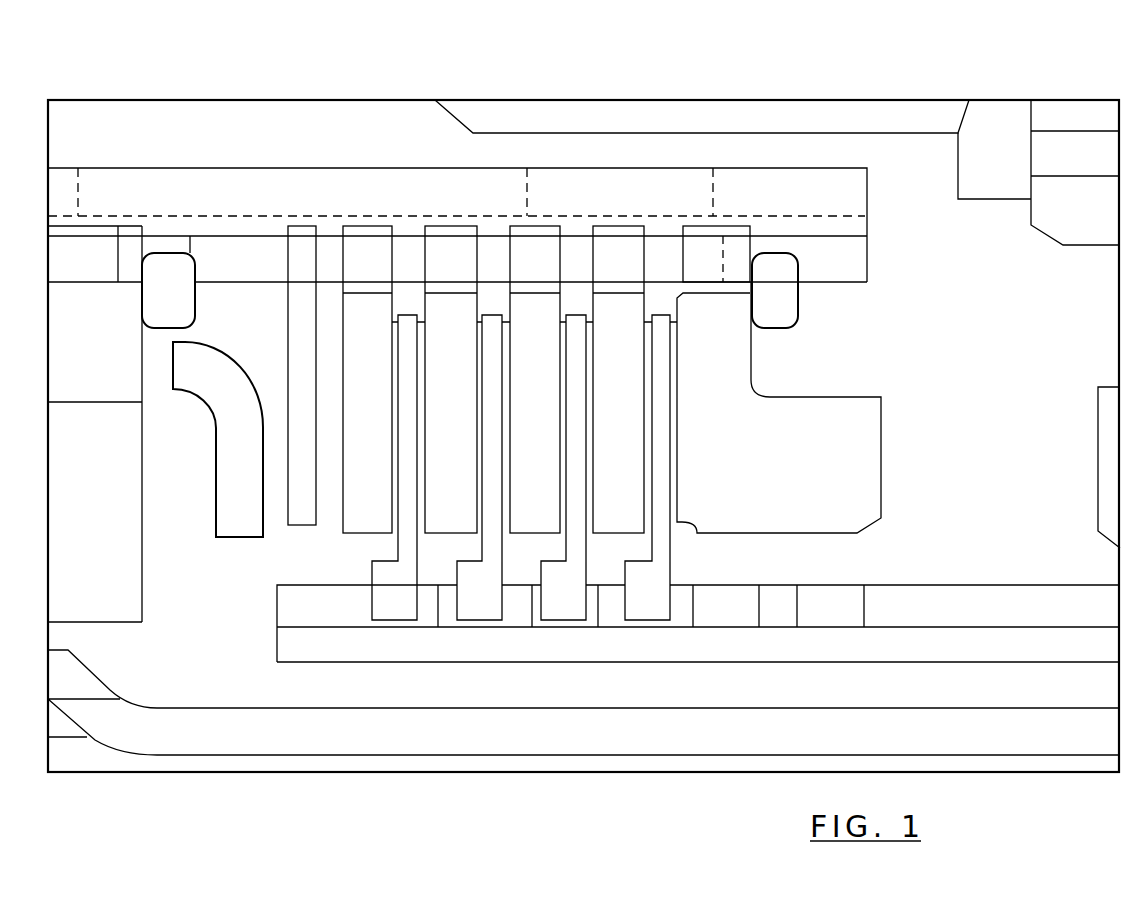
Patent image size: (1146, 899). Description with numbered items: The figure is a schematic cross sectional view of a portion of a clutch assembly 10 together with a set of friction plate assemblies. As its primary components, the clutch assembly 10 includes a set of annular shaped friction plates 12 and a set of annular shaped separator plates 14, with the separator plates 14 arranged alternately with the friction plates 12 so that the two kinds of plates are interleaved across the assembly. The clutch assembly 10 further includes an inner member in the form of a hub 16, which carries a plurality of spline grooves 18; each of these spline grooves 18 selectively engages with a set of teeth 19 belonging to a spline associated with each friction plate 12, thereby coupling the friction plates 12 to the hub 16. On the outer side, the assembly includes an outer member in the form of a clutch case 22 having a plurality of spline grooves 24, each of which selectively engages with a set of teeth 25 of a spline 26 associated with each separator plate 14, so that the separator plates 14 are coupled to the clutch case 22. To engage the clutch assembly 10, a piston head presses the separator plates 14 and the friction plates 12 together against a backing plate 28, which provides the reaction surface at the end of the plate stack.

The clutch assembly 10 is at (380, 83).
The friction plates 12 is at (673, 542).
The separator plates 14 is at (637, 287).
The hub 16 is at (297, 602).
The spline grooves 18 is at (622, 601).
The teeth 19 is at (477, 622).
The clutch case 22 is at (817, 253).
The spline grooves 24 is at (648, 264).
The teeth 25 is at (617, 257).
The spline 26 is at (605, 262).
The backing plate 28 is at (712, 348).